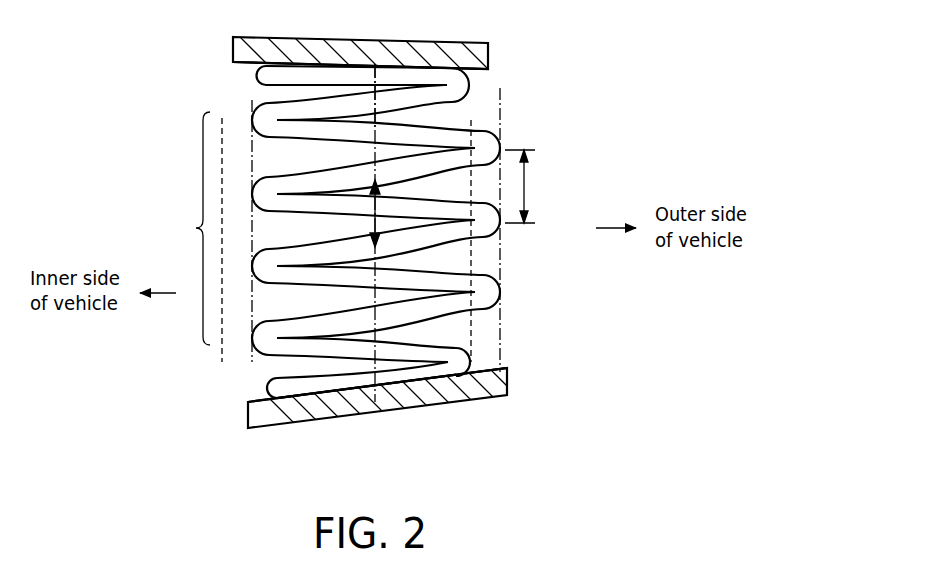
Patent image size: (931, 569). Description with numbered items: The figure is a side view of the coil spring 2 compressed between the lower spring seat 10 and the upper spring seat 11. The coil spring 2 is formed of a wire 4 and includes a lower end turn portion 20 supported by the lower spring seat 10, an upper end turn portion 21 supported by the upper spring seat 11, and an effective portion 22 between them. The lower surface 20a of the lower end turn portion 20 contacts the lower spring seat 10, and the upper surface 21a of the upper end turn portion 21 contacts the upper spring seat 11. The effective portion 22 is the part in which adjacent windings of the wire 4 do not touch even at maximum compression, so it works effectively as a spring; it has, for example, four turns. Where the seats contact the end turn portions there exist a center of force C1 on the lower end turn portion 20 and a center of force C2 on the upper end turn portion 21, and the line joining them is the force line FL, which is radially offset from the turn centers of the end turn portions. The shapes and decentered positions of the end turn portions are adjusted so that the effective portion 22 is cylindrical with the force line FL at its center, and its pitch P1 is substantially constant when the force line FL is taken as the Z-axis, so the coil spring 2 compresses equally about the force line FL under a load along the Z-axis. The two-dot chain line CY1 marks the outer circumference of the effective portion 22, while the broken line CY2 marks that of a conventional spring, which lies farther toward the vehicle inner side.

The coil spring 2 is at (533, 106).
The wire 4 is at (490, 146).
The lower spring seat 10 is at (485, 372).
The upper spring seat 11 is at (490, 71).
The lower end turn portion 20 is at (315, 385).
The lower surface 20a is at (422, 381).
The upper end turn portion 21 is at (355, 77).
The upper surface 21a is at (306, 38).
The effective portion 22 is at (197, 237).
The center of force C1 is at (376, 402).
The center of force C2 is at (376, 64).
The two-dot chain line CY1 is at (500, 265).
The broken line CY2 is at (471, 320).
The force line FL is at (372, 156).
The pitch P1 is at (528, 185).
The element Z-axis is at (372, 232).